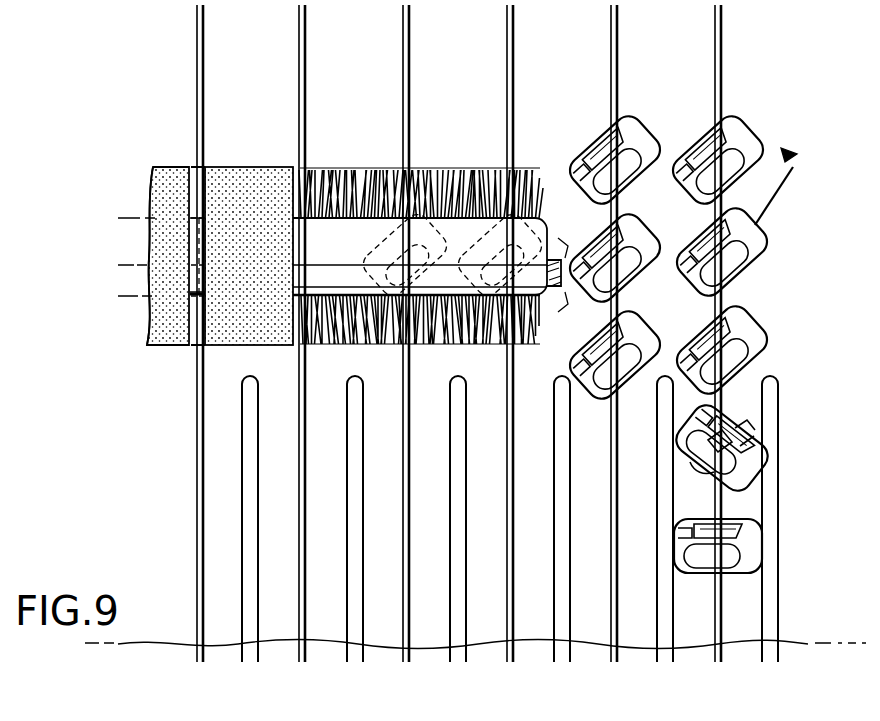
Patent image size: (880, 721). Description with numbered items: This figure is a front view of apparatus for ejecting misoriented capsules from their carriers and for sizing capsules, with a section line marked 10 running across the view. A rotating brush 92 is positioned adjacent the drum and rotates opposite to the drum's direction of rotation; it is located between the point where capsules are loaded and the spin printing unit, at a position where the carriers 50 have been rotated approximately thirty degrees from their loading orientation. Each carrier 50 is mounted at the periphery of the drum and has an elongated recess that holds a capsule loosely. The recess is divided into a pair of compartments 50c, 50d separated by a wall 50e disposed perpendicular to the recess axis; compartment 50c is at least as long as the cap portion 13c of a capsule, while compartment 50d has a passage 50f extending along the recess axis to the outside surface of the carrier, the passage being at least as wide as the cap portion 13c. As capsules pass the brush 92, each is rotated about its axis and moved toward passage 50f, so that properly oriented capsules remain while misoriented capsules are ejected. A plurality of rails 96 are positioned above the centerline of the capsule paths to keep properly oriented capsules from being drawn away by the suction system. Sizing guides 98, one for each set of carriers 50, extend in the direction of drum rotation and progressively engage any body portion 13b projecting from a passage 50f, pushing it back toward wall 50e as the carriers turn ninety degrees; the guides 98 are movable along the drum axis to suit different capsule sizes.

The section line 10- 10 is at (810, 95).
The body portion 13b is at (708, 322).
The cap portion 13c is at (697, 389).
The carrier 50 is at (690, 351).
The compartment 50c is at (694, 476).
The compartment 50d is at (745, 428).
The wall 50e is at (715, 440).
The passage 50f is at (750, 448).
The rotating brush 92 is at (373, 170).
The rails 96 is at (201, 670).
The guides 98 is at (249, 660).